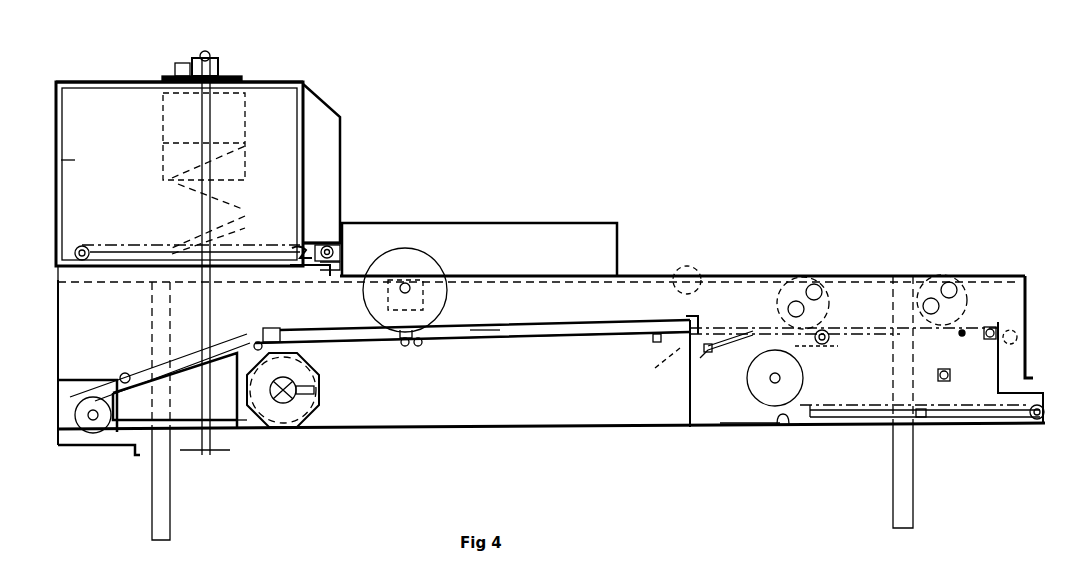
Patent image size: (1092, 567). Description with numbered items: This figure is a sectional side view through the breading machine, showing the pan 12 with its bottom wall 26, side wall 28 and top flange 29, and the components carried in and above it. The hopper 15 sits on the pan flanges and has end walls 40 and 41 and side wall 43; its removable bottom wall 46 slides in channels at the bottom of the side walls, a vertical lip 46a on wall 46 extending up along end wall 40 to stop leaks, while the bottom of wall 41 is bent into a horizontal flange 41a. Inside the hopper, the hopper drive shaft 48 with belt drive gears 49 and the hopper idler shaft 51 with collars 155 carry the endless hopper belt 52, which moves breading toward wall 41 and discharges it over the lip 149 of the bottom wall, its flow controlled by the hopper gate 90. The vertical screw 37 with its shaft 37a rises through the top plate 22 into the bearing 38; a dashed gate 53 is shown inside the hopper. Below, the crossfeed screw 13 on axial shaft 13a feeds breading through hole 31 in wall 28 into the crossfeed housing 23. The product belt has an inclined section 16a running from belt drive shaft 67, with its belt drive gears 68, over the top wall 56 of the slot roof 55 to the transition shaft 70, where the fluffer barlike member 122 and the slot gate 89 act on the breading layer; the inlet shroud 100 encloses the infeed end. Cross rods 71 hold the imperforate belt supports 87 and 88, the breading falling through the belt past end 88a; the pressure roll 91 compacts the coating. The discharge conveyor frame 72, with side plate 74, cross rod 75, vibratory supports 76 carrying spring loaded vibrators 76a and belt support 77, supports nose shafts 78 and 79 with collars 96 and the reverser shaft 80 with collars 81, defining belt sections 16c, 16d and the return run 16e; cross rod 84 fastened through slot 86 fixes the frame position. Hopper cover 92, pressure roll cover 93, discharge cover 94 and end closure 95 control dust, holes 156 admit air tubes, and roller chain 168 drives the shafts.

The pan 12 is at (560, 426).
The crossfeed screw 13 is at (315, 427).
The axial shaft 13a is at (283, 403).
The hopper 15 is at (55, 114).
The inclined section 16a is at (112, 382).
The horizontal section 16c is at (808, 348).
The horizontal section 16d is at (800, 408).
The horizontal return run 16e is at (783, 425).
The top plate 22 is at (240, 76).
The crossfeed housing 23 is at (320, 385).
The bottom wall 26 is at (625, 426).
The side wall 28 is at (505, 427).
The top flange 29 is at (683, 270).
The hole 31 is at (322, 400).
The vertical screw 37 is at (224, 256).
The shaft 37a is at (206, 52).
The bearing 38 is at (218, 62).
The end wall 40 is at (58, 138).
The end wall 41 is at (303, 160).
The horizontal flange 41a is at (322, 244).
The side wall 43 is at (72, 165).
The removable bottom wall 46 is at (65, 268).
The vertical lip 46a is at (55, 259).
The hopper drive shaft 48 is at (334, 248).
The belt drive gears 49 is at (342, 266).
The hopper idler shaft 51 is at (81, 247).
The hopper belt 52 is at (218, 246).
The gate 53 is at (240, 110).
The slot roof 55 is at (205, 350).
The top wall 56 is at (185, 452).
The belt drive shaft 67 is at (75, 408).
The belt drive gears 68 is at (58, 432).
The transition shaft 70 is at (266, 328).
The cross rods 71 is at (277, 328).
The discharge conveyor frame 72 is at (688, 426).
The side plate 74 is at (735, 428).
The cross rod 75 is at (958, 334).
The vibratory supports 76 is at (708, 356).
The spring loaded vibrators 76a is at (750, 336).
The belt support 77 is at (818, 425).
The nose shaft 78 is at (830, 337).
The nose shaft 79 is at (1045, 410).
The reverser shaft 80 is at (771, 375).
The collars 81 is at (748, 384).
The cross rod 84 is at (706, 352).
The slot 86 is at (652, 370).
The imperforate belt support 87 is at (360, 343).
The imperforate belt support 88 is at (576, 333).
The end 88a is at (695, 318).
The slot gate 89 is at (240, 430).
The hopper gate 90 is at (298, 252).
The pressure roll 91 is at (440, 270).
The hopper cover 92 is at (124, 82).
The pressure roll cover 93 is at (470, 223).
The discharge cover 94 is at (720, 276).
The end closure 95 is at (1027, 342).
The collars 96 is at (830, 344).
The inlet shroud 100 is at (58, 380).
The barlike member 122 is at (128, 374).
The lip 149 is at (296, 282).
The collars 155 is at (100, 252).
The holes 156 is at (824, 305).
The endless roller chain 168 is at (490, 330).